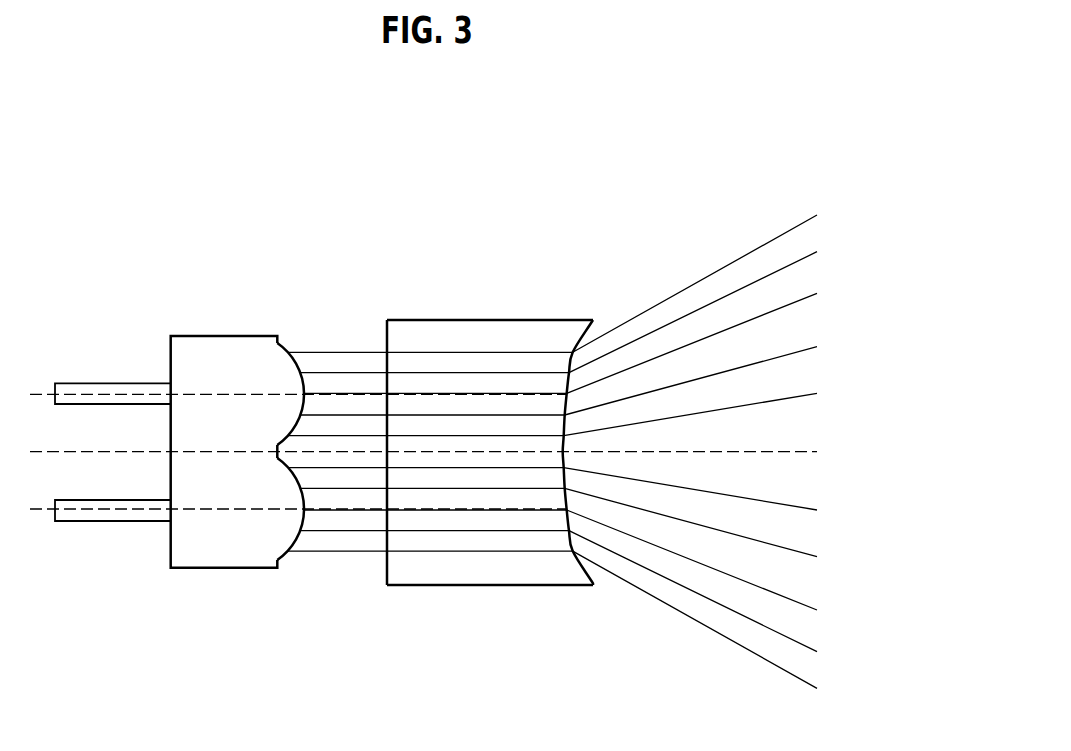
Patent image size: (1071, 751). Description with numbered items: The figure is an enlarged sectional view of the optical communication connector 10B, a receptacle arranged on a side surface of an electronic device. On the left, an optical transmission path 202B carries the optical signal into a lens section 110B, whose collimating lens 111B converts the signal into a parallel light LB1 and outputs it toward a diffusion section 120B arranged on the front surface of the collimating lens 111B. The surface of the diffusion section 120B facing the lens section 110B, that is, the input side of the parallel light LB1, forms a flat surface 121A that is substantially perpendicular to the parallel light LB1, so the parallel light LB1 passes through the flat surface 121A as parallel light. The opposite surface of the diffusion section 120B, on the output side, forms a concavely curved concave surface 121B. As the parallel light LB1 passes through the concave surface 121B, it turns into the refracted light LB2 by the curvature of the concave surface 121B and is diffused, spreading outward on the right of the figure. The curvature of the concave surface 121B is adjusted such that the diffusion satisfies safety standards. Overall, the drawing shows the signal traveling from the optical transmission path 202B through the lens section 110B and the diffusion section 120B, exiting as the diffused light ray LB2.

The optical communication connector 10B is at (193, 218).
The optical transmission path 202B is at (110, 382).
The lens section 110B is at (212, 553).
The collimating lens 111B is at (302, 350).
The parallel light LB1 is at (323, 350).
The diffusion section 120B is at (490, 568).
The flat surface 121A is at (385, 340).
The concave surface 121B is at (605, 337).
The refracted light LB2 is at (693, 285).